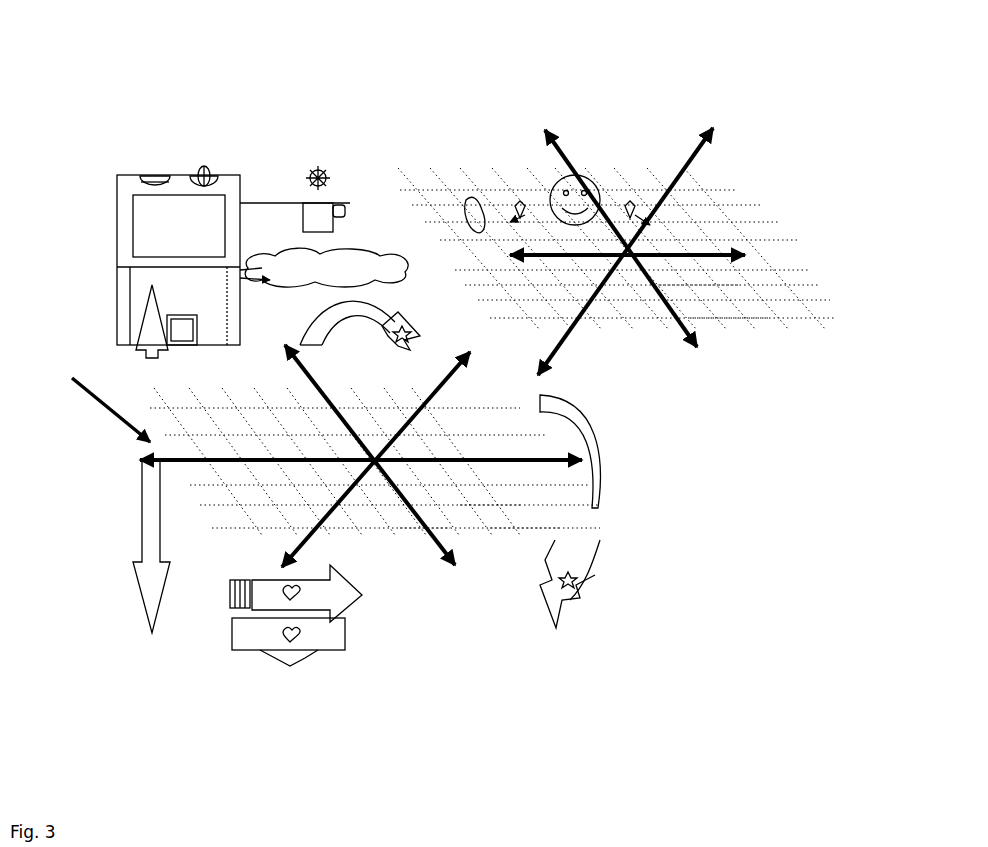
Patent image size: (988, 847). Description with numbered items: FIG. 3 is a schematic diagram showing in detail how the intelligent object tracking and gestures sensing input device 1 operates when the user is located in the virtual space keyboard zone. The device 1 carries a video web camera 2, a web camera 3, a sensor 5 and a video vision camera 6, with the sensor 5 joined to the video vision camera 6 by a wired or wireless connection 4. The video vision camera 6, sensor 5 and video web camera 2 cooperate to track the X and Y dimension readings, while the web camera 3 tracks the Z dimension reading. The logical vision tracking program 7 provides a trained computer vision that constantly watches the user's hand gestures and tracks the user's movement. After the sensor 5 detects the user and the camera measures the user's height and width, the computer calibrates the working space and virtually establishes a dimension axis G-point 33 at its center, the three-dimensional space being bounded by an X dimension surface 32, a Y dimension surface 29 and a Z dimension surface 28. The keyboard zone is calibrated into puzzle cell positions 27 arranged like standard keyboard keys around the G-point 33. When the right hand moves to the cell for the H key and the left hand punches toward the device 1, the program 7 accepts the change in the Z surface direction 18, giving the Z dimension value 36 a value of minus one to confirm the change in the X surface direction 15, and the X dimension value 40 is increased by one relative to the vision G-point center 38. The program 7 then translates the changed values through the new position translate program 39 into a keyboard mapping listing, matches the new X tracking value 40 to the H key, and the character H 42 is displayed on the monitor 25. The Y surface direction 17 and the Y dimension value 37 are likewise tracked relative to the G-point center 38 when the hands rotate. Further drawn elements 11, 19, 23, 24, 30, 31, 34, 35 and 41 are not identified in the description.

The intelligent object tracking and gestures sensing input device 1 is at (122, 172).
The video web camera 2 is at (155, 172).
The web camera 3 is at (204, 172).
The connection 4 is at (294, 196).
The sensor 5 is at (318, 162).
The video vision camera 6 is at (349, 200).
The logical vision tracking program 7 is at (377, 250).
The face icon 11 is at (602, 170).
The X surface direction 15 is at (322, 300).
The Y surface direction 17 is at (570, 595).
The Z surface direction 18 is at (345, 657).
The heart arrow box 19 is at (250, 598).
The small square 23 is at (165, 332).
The horizontal divider 24 is at (158, 267).
The monitor 25 is at (133, 237).
The puzzle cell positions 27 is at (444, 242).
The Z dimension surface 28 is at (540, 126).
The Y dimension surface 29 is at (697, 126).
The keyboard row 30 is at (728, 322).
The keyboard row 31 is at (697, 292).
The X dimension surface 32 is at (665, 262).
The dimension axis G-point 33 is at (633, 258).
The keyboard row 34 is at (520, 543).
The keyboard row 35 is at (488, 512).
The Z dimension value 36 is at (457, 385).
The Y dimension value 37 is at (425, 545).
The vision G-point center 38 is at (377, 462).
The new position translate program 39 is at (132, 553).
The X dimension value 40 is at (136, 458).
The lower keyboard columns 41 is at (150, 380).
The character H 42 is at (135, 218).